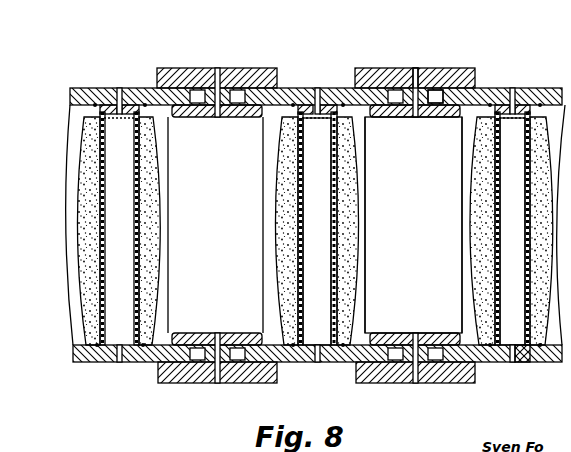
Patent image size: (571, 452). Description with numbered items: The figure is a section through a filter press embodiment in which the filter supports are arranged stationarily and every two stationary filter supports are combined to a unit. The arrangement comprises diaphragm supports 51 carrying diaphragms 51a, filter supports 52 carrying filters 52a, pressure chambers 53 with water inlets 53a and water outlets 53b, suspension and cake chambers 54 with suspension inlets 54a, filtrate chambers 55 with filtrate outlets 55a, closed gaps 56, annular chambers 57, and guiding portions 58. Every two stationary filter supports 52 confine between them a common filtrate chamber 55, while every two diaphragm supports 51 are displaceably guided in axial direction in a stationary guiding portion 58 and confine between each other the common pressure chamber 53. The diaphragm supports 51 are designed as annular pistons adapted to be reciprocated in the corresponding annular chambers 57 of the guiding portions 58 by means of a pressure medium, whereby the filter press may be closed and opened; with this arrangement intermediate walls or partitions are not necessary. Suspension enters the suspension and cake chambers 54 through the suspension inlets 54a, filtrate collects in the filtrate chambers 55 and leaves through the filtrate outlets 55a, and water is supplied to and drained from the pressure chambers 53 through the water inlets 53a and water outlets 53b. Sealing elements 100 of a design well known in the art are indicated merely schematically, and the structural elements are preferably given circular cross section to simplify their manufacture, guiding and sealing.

The sealing elements 100 is at (277, 73).
The diaphragm supports 51 is at (370, 184).
The diaphragms 51a is at (355, 152).
The filter supports 52 is at (302, 88).
The filters 52a is at (334, 184).
The pressure chambers 53 is at (413, 225).
The water inlets 53a is at (437, 95).
The water outlets 53b is at (415, 362).
The suspension and cake chambers 54 is at (478, 193).
The suspension inlets 54a is at (514, 88).
The filtrate chambers 55 is at (326, 340).
The filtrate outlets 55a is at (517, 355).
The closed gaps 56 is at (498, 350).
The annular chambers 57 is at (232, 108).
The guiding portions 58 is at (413, 82).